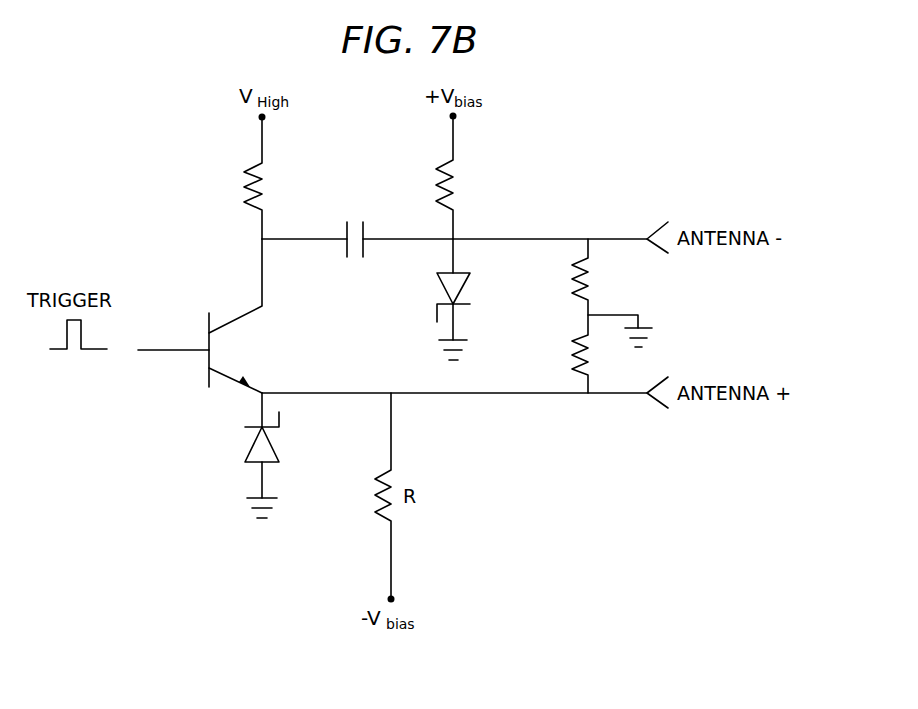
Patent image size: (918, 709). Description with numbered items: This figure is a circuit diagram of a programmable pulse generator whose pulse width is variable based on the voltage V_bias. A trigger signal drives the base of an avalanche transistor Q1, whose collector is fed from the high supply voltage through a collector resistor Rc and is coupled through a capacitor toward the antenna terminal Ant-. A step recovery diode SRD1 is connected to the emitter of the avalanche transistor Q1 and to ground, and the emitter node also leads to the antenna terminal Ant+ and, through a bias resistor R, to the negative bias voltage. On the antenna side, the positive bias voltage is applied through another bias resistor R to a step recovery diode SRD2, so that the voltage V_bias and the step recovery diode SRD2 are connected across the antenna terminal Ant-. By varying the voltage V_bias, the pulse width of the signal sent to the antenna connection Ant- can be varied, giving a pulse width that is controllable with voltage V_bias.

The avalanche transistor Q1 is at (235, 316).
The collector resistor Rc is at (267, 177).
The bias resistor R is at (453, 176).
The step recovery diode SRD1 is at (291, 455).
The step recovery diode SRD2 is at (488, 299).